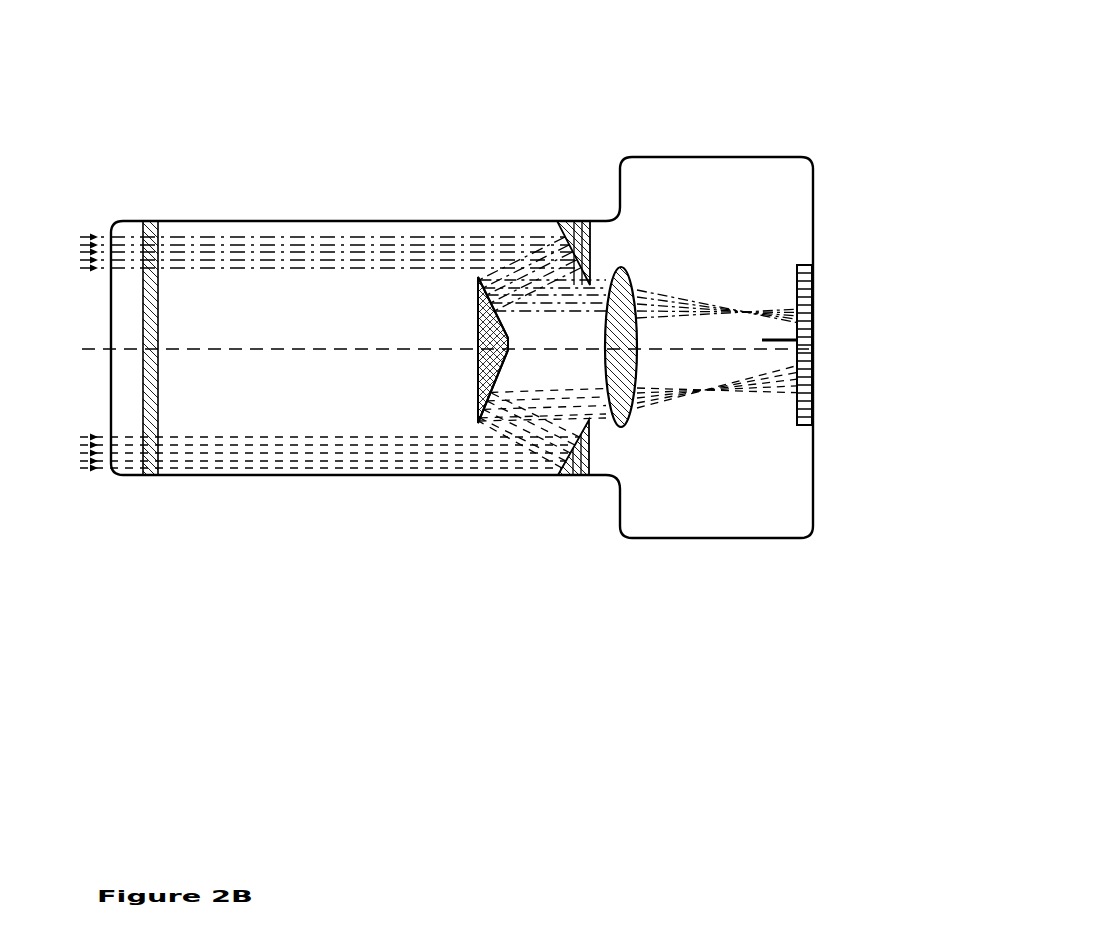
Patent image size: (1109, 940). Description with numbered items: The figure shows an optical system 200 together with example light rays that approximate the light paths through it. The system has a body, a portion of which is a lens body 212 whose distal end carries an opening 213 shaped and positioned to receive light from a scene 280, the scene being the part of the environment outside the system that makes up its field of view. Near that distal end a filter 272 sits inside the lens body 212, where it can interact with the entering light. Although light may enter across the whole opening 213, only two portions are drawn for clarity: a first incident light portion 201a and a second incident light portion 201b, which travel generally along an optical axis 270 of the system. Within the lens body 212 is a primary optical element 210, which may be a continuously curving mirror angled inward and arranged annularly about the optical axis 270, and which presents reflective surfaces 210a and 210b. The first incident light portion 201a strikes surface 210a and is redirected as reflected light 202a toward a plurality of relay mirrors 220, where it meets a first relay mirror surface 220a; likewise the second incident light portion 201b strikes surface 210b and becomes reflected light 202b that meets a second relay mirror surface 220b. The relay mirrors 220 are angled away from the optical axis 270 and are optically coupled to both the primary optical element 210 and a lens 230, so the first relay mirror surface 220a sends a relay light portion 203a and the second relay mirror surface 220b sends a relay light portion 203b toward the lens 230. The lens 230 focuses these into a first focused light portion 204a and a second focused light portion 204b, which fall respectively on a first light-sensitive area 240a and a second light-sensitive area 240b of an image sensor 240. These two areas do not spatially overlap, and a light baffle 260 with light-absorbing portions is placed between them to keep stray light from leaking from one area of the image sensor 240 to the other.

The optical system 200 is at (722, 72).
The lens body 212 is at (311, 221).
The scene 280 is at (80, 214).
The filter 272 is at (160, 382).
The opening 213 is at (108, 280).
The optical axis 270 is at (338, 350).
The second incident light portion 201b is at (108, 273).
The first incident light portion 201a is at (108, 437).
The primary optical element 210 is at (592, 450).
The reflective surface of primary optical element 210b is at (560, 224).
The reflective surface of primary optical element 210a is at (563, 477).
The reflected light 202b is at (565, 292).
The reflected light 202a is at (560, 420).
The plurality of relay mirrors 220 is at (478, 410).
The second relay mirror surface 220b is at (478, 312).
The first relay mirror surface 220a is at (478, 375).
The relay light portion 203b is at (598, 286).
The relay light portion 203a is at (592, 407).
The lens 230 is at (630, 405).
The second focused light portion 204b is at (643, 293).
The first focused light portion 204a is at (685, 390).
The light baffle 260 is at (772, 338).
The image sensor 240 is at (812, 372).
The second light-sensitive area 240b is at (797, 268).
The first light-sensitive area 240a is at (797, 422).